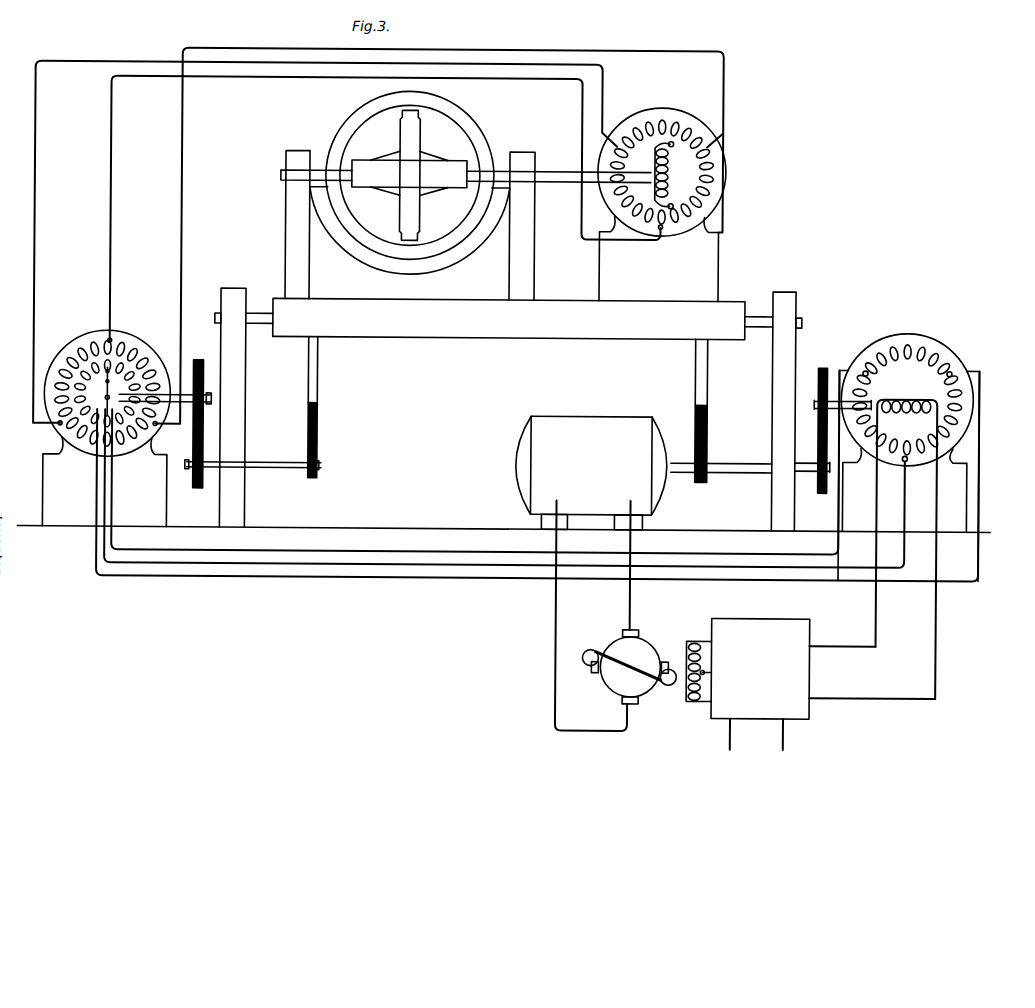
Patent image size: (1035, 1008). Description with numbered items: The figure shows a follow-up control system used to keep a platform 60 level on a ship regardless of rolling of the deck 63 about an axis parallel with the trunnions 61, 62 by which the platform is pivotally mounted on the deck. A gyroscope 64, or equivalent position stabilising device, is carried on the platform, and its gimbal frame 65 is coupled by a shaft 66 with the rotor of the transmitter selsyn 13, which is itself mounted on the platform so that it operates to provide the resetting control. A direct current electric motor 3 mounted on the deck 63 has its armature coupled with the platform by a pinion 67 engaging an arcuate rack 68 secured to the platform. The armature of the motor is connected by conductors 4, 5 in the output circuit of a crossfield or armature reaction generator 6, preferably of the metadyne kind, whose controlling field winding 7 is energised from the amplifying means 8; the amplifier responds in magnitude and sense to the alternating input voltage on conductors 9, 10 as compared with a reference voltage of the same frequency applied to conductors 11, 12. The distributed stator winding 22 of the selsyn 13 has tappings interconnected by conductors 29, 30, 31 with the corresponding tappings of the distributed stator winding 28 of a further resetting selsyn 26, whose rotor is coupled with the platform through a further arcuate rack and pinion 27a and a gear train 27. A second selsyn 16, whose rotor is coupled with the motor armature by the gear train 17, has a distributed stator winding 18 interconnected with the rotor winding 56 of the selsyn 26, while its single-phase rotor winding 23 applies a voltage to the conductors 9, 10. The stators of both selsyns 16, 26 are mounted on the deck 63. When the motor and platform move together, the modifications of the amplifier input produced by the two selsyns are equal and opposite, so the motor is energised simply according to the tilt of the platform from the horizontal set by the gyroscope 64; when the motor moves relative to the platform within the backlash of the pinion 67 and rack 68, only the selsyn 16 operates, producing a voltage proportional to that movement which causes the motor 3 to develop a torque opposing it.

The direct current electric motor 3 is at (598, 476).
The conductor 4 is at (634, 607).
The conductor 5 is at (556, 619).
The crossfield or armature reaction generator 6 is at (637, 660).
The controlling field winding 7 is at (697, 643).
The amplifying means 8 is at (766, 682).
The conductor 9 is at (852, 644).
The conductor 10 is at (862, 696).
The conductor 11 is at (786, 741).
The conductor 12 is at (733, 740).
The transmitter selsyn device 13 is at (725, 201).
The second selsyn device 16 is at (950, 352).
The gear train 17 is at (818, 458).
The distributed stator winding 18 is at (922, 351).
The distributed stator winding 22 is at (726, 158).
The single-phase rotor winding 23 is at (926, 410).
The selsyn device 26 is at (78, 345).
The gear train 27 is at (201, 448).
The arcuate rack and pinion 27a is at (320, 456).
The distributed stator winding 28 is at (125, 348).
The conductor 29 is at (35, 170).
The conductor 30 is at (111, 171).
The conductor 31 is at (182, 171).
The rotor winding 56 is at (67, 390).
The platform 60 is at (277, 300).
The trunnion 61 is at (215, 319).
The trunnion 62 is at (803, 322).
The deck 63 is at (993, 529).
The gyroscope 64 is at (512, 134).
The gimbal frame 65 is at (464, 113).
The shaft 66 is at (548, 184).
The pinion 67 is at (705, 481).
The arcuate rack 68 is at (710, 428).